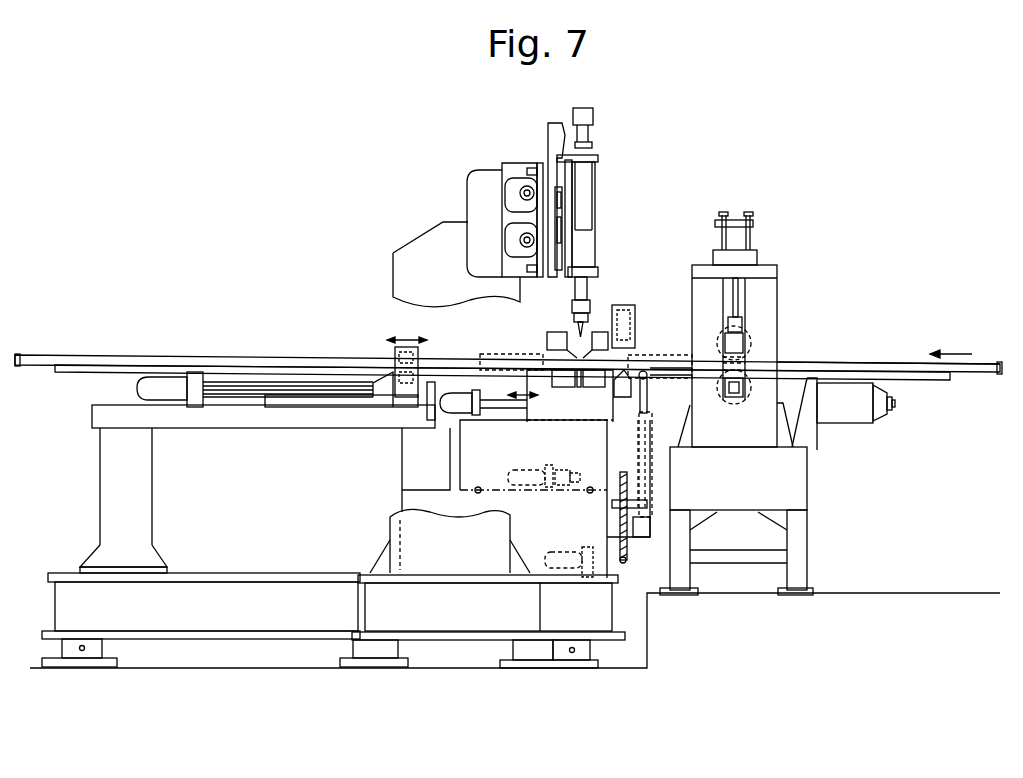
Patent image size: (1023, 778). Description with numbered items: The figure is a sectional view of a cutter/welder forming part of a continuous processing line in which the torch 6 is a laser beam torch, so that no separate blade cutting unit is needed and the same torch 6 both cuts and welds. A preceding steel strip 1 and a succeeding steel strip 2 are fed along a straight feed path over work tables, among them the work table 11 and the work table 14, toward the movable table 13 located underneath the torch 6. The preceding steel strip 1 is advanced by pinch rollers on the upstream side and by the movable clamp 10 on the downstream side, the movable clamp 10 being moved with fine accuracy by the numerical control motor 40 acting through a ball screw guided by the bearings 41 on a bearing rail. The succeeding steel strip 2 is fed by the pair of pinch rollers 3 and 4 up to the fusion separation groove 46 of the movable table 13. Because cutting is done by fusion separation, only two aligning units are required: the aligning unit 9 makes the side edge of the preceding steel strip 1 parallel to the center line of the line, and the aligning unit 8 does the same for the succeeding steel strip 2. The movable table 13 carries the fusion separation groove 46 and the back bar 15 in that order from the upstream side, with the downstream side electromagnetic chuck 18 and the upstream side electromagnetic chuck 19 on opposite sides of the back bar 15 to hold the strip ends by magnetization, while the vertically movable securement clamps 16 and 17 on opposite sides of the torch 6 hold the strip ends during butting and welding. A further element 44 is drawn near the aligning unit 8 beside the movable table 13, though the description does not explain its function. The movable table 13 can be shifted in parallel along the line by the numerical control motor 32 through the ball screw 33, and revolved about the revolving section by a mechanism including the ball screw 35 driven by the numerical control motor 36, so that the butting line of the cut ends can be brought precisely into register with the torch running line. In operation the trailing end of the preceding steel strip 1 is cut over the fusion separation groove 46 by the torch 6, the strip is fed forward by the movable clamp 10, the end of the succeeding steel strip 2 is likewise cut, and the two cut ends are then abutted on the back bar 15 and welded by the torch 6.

The preceding steel strip 1 is at (125, 357).
The succeeding steel strip 2 is at (862, 365).
The pinch roller 3 is at (750, 335).
The pinch roller 4 is at (775, 372).
The welding torch 6 is at (588, 283).
The aligning unit 8 is at (672, 356).
The aligning unit 9 is at (505, 355).
The movable clamp 10 is at (393, 353).
The work table 11 is at (915, 380).
The movable table 13 is at (525, 387).
The work table 14 is at (283, 366).
The back bar 15 is at (578, 388).
The securement clamp 16 is at (595, 332).
The securement clamp 17 is at (545, 348).
The downstream side electromagnetic chuck 18 is at (592, 388).
The upstream side electromagnetic chuck 19 is at (558, 388).
The numerical control motor 32 is at (458, 393).
The ball screw 33 is at (497, 404).
The ball screw 35 is at (563, 470).
The numerical control motor 36 is at (522, 470).
The numerical control motor 40 is at (137, 388).
The bearings 41 is at (238, 392).
The lever 44 is at (647, 378).
The fusion separation groove 46 is at (608, 473).